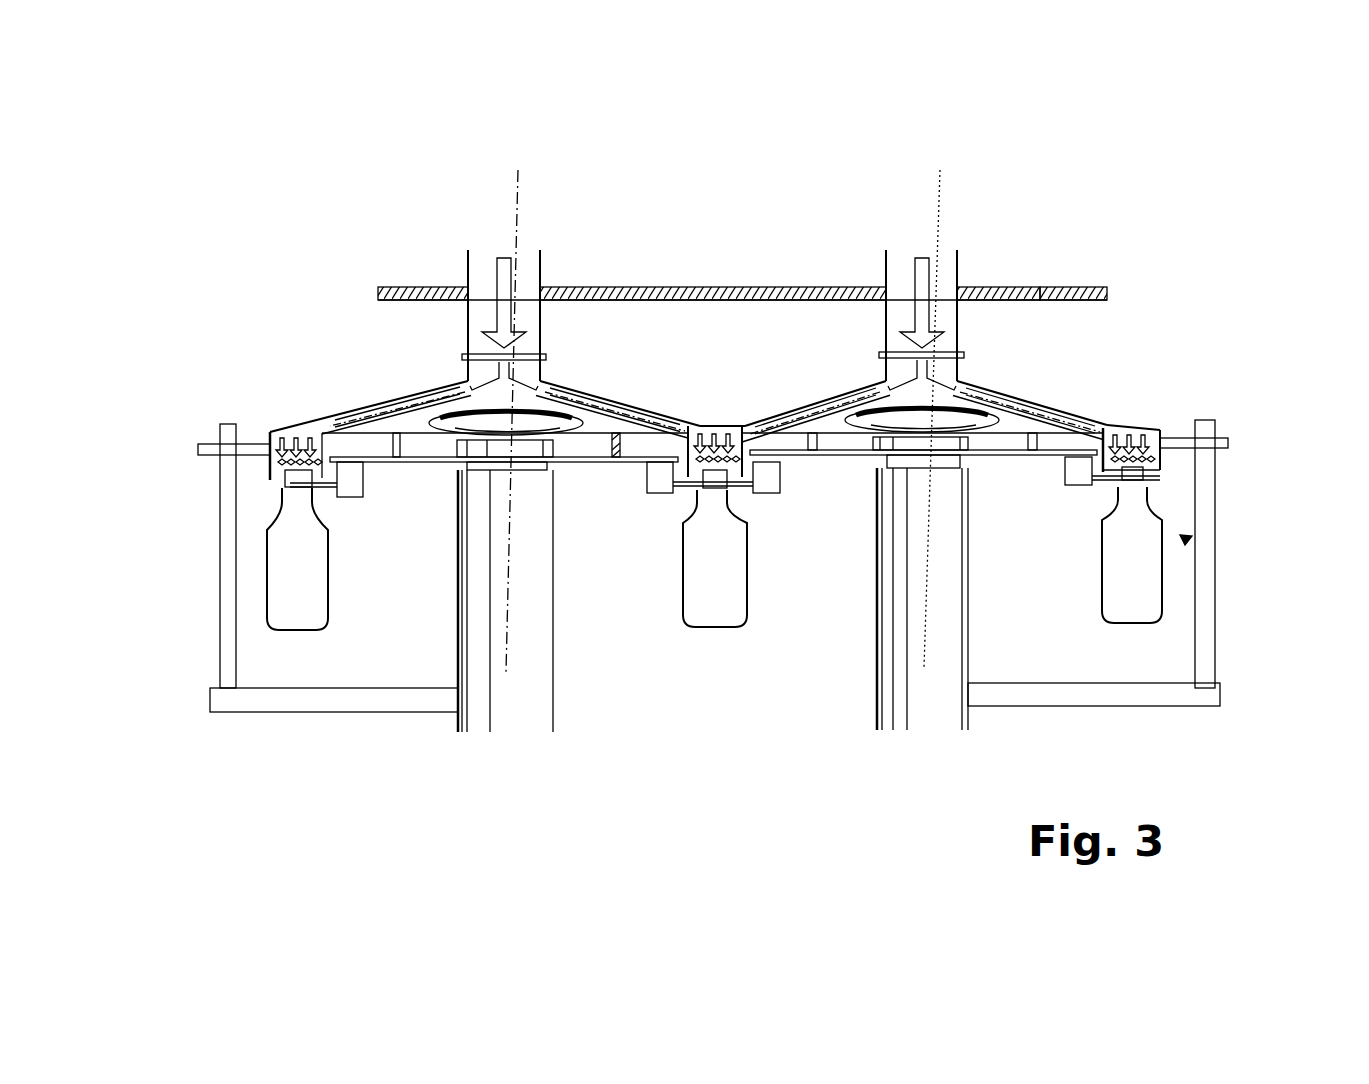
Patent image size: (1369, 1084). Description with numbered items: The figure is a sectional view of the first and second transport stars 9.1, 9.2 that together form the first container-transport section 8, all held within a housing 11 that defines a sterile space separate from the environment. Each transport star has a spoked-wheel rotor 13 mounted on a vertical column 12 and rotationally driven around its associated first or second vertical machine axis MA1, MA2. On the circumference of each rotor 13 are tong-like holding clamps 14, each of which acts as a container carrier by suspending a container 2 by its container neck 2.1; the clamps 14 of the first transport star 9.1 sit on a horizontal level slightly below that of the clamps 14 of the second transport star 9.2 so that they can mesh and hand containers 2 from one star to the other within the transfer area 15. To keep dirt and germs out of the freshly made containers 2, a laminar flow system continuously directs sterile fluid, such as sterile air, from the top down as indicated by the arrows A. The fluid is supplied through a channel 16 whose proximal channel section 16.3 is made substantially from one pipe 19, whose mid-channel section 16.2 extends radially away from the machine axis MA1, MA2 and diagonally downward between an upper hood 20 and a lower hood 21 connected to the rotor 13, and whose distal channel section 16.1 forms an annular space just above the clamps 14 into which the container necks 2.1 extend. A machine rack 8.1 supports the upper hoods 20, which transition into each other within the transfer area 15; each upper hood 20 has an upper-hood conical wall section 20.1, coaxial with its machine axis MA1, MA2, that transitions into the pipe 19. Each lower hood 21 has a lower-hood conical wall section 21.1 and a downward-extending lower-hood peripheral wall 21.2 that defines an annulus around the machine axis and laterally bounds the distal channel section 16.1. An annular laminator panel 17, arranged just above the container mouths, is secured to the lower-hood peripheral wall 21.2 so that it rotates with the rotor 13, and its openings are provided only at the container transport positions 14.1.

The container 2 is at (302, 565).
The container neck 2.1 is at (287, 482).
The first container-transport section 8 is at (797, 303).
The machine rack 8.1 is at (220, 648).
The first transport star 9.1 is at (370, 292).
The second transport star 9.2 is at (1134, 242).
The housing 11 is at (712, 283).
The vertical column 12 is at (538, 673).
The spoked-wheel rotor 13 is at (445, 455).
The holding clamp 14 is at (296, 475).
The container transport position 14.1 is at (1185, 539).
The transfer area 15 is at (713, 415).
The channel 16 is at (595, 403).
The distal channel section 16.1 is at (270, 468).
The mid-channel section 16.2 is at (433, 397).
The proximal channel section 16.3 is at (523, 312).
The laminator panel 17 is at (308, 444).
The pipe 19 is at (463, 273).
The upper hood 20 is at (663, 407).
The upper-hood conical wall section 20.1 is at (360, 407).
The lower hood 21 is at (605, 425).
The lower-hood conical wall section 21.1 is at (1062, 415).
The lower-hood peripheral wall 21.2 is at (1108, 433).
The arrows indicating laminar flow A is at (283, 442).
The first vertical machine axis MA1 is at (540, 421).
The second vertical machine axis MA2 is at (956, 419).